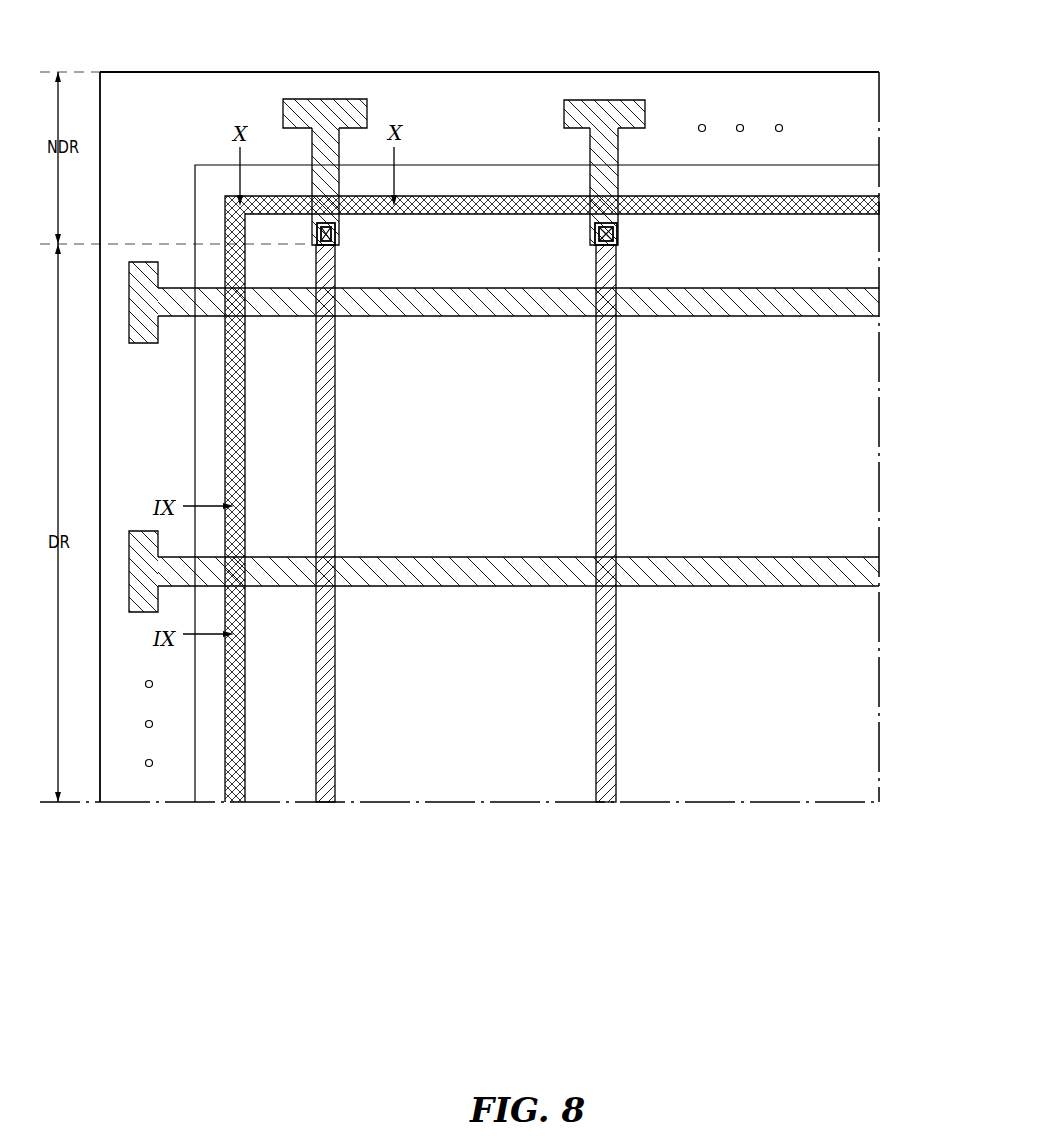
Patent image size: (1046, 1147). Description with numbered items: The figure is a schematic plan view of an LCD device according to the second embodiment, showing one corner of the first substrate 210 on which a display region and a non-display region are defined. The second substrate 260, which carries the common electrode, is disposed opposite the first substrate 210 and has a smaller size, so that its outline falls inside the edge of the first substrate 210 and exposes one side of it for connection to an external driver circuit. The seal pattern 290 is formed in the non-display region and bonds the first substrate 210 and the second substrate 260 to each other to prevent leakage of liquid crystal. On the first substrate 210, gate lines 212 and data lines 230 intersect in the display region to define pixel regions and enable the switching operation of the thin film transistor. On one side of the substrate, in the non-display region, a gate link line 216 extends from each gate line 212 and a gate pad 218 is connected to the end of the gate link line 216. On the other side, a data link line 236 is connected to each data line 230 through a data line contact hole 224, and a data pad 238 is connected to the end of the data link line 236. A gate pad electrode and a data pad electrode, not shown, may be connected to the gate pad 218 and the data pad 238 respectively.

The first substrate 210 is at (796, 97).
The gate line 212 is at (735, 304).
The gate link line 216 is at (178, 317).
The gate pad 218 is at (142, 344).
The data line contact hole 224 is at (622, 233).
The data line 230 is at (617, 427).
The data link line 236 is at (619, 145).
The data pad 238 is at (603, 100).
The second substrate 260 is at (815, 166).
The seal pattern 290 is at (790, 206).